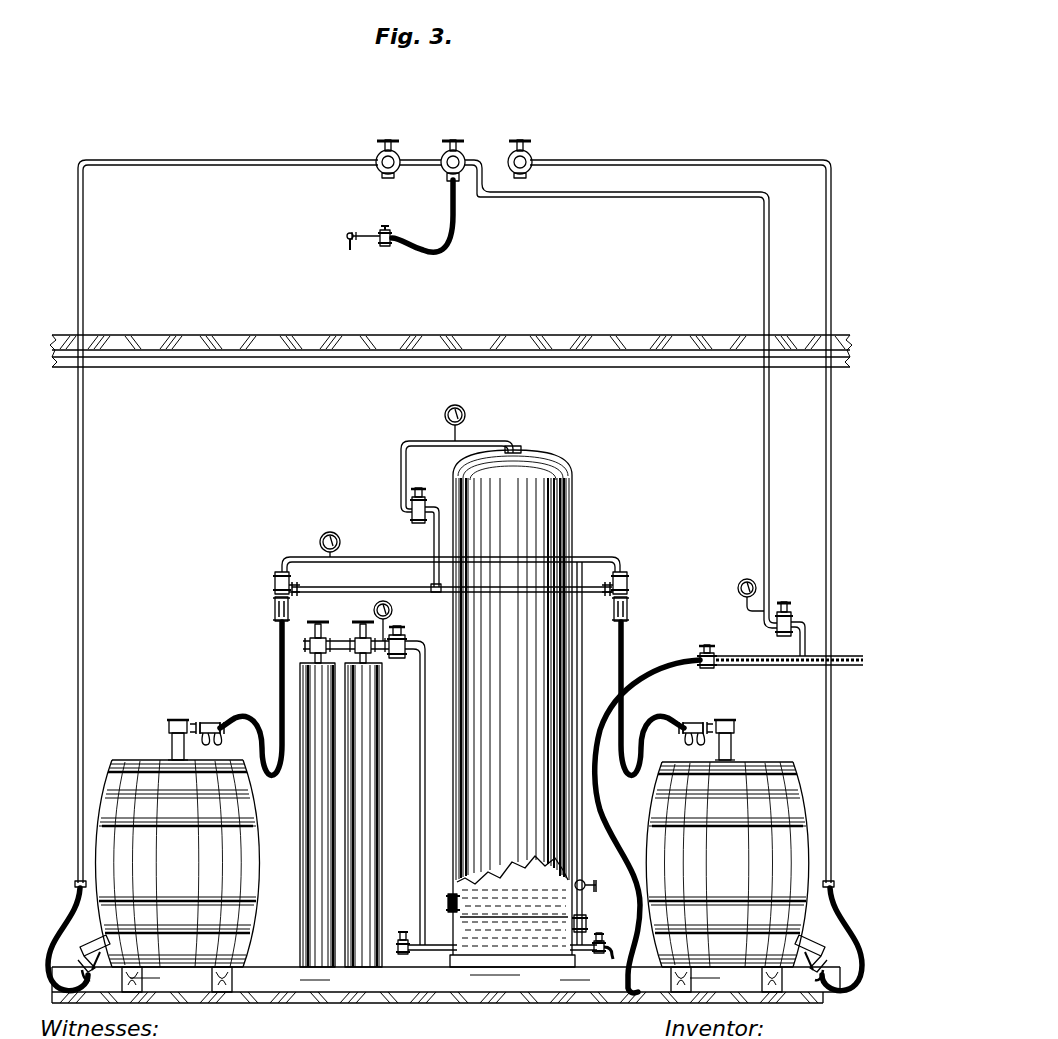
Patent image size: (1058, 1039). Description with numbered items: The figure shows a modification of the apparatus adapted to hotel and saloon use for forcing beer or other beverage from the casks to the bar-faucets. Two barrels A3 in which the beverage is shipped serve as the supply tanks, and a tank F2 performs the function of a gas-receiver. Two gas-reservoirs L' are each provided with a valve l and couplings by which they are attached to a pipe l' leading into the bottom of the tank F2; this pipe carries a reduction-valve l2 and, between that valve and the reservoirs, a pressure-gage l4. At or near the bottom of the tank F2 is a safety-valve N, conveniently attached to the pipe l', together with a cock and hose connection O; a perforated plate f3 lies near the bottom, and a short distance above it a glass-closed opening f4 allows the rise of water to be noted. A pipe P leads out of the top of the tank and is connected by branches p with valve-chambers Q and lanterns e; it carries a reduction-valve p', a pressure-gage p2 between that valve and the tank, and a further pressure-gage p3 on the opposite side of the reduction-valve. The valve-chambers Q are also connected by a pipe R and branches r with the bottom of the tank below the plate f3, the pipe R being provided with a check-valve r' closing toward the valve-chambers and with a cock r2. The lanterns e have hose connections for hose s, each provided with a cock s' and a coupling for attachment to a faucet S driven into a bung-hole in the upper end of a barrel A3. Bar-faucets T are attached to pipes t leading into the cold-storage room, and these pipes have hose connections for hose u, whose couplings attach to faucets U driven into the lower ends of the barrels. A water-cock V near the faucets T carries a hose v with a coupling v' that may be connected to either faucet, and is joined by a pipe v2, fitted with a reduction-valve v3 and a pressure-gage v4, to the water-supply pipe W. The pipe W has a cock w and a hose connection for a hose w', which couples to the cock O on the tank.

The pipe t is at (708, 160).
The bar-faucet T is at (454, 146).
The water-cock V is at (453, 147).
The hose v is at (422, 216).
The coupling v' is at (369, 225).
The pipe v2 is at (763, 293).
The reduction-valve v3 is at (788, 602).
The pressure-gage v4 is at (745, 578).
The water-supply pipe W is at (755, 656).
The cock w is at (708, 643).
The hose w' is at (647, 826).
The pipe P is at (400, 470).
The reduction-valve p' is at (411, 540).
The pressure-gage p2 is at (445, 419).
The pressure-gage p3 is at (331, 532).
The branch p is at (452, 577).
The branch r is at (451, 552).
The valve-chamber Q is at (628, 585).
The lantern e is at (614, 610).
The hose s is at (452, 698).
The cock s' is at (451, 716).
The faucet S is at (170, 742).
The gas-reservoir L' is at (332, 815).
The valve l is at (346, 628).
The reduction-valve l2 is at (408, 646).
The pressure-gage l4 is at (393, 611).
The pipe l' is at (427, 795).
The safety-valve N is at (403, 932).
The tank F2 is at (512, 708).
The perforated plate f3 is at (517, 915).
The glass-closed opening f4 is at (448, 905).
The pipe R is at (590, 668).
The cock r2 is at (592, 888).
The check-valve r' is at (588, 914).
The cock and hose connection O is at (604, 944).
The barrel A3 is at (452, 863).
The faucet U is at (814, 940).
The hose u is at (844, 908).